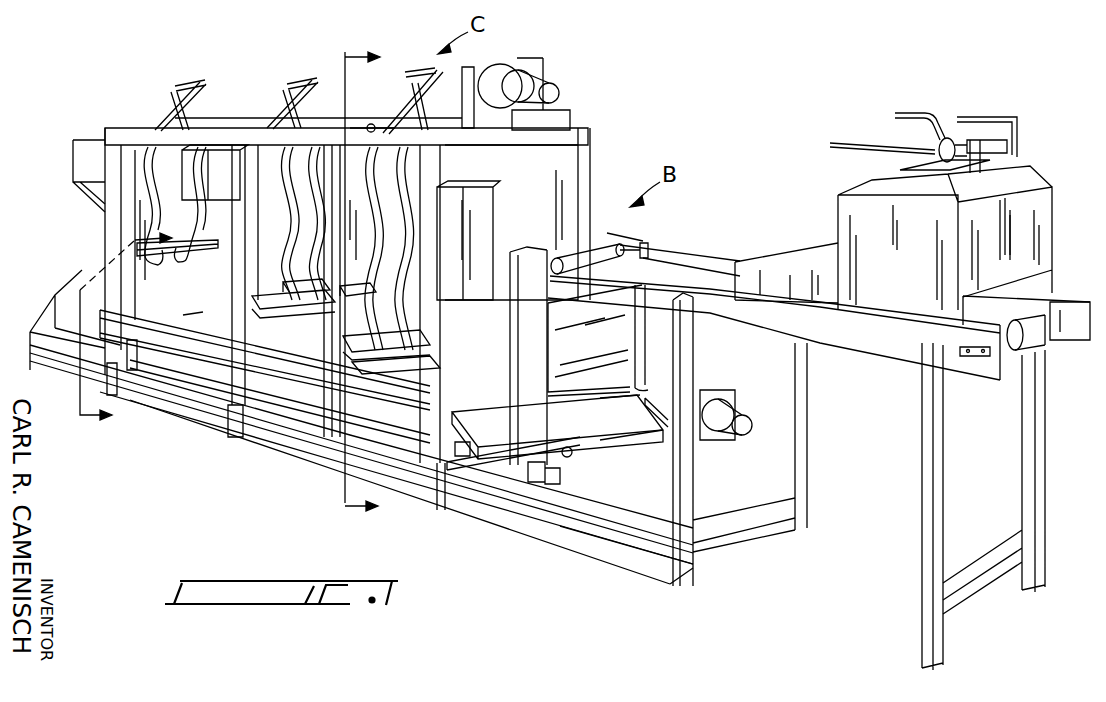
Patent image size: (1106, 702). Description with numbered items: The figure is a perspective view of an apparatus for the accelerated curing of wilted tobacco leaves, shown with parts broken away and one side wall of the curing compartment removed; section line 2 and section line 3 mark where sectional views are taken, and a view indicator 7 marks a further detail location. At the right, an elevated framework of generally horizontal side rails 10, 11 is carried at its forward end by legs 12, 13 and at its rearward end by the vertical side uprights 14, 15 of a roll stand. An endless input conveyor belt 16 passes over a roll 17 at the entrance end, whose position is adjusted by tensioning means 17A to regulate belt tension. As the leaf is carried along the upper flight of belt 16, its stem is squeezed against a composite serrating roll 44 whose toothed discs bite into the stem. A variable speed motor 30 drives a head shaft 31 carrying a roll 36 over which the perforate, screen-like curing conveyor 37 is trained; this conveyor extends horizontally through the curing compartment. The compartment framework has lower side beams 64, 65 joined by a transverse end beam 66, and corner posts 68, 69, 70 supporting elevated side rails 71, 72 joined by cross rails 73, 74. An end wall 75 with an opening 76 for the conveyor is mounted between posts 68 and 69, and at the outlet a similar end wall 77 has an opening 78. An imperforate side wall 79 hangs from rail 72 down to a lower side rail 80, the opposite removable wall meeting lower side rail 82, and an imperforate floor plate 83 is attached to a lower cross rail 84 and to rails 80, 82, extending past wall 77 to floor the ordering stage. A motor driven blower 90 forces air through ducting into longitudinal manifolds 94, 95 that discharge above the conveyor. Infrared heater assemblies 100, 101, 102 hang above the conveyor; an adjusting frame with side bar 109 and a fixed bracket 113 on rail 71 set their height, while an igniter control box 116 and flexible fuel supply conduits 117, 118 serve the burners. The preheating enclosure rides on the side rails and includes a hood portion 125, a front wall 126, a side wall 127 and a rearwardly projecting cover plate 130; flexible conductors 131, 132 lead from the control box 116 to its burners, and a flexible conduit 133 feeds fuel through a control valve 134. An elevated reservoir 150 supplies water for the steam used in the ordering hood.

The section line 2- 2 is at (370, 283).
The section line 3- 3 is at (133, 334).
The base frame 7 is at (30, 352).
The side rail 10 is at (863, 350).
The side rail 11 is at (1070, 300).
The leg 12 is at (943, 478).
The leg 13 is at (1045, 462).
The side upright 14 is at (512, 323).
The side upright 15 is at (660, 405).
The belt 16 is at (692, 270).
The roll 17 is at (1050, 345).
The tensioning means 17A is at (968, 358).
The variable speed motor 30 is at (712, 392).
The head shaft 31 is at (562, 462).
The roll 36 is at (625, 428).
The curing conveyor 37 is at (192, 300).
The composite serrating roll 44 is at (632, 240).
The lower side beam 64 is at (531, 531).
The lower side beam 65 is at (640, 470).
The transverse end beam 66 is at (755, 540).
The corner post 68 is at (450, 182).
The corner post 69 is at (590, 152).
The corner post 70 is at (105, 236).
The side rail 71 is at (276, 145).
The side rail 72 is at (372, 124).
The cross rail 73 is at (553, 145).
The cross rail 74 is at (162, 128).
The end wall 75 is at (512, 225).
The opening 76 is at (478, 430).
The end wall 77 is at (157, 250).
The opening 78 is at (136, 352).
The imperforate side wall 79 is at (360, 230).
The lower side rail 80 is at (745, 450).
The lower side rail 82 is at (368, 448).
The floor plate 83 is at (44, 298).
The lower cross rail 84 is at (490, 476).
The motor driven blower 90 is at (522, 68).
The manifold 94 is at (375, 358).
The manifold 95 is at (278, 318).
The heater assembly 100 is at (438, 370).
The heater assembly 101 is at (352, 290).
The heater assembly 102 is at (197, 250).
The side bar 109 is at (396, 105).
The fixed bracket 113 is at (420, 112).
The igniter control box 116 is at (228, 150).
The fuel supply conduit 117 is at (400, 240).
The fuel supply conduit 118 is at (380, 206).
The hood portion 125 is at (1026, 174).
The front wall 126 is at (1050, 228).
The side wall 127 is at (945, 238).
The cover plate 130 is at (778, 262).
The flexible conductor 131 is at (852, 146).
The flexible conductor 132 is at (1000, 117).
The flexible conduit 133 is at (912, 113).
The control valve 134 is at (937, 150).
The elevated reservoir 150 is at (75, 158).